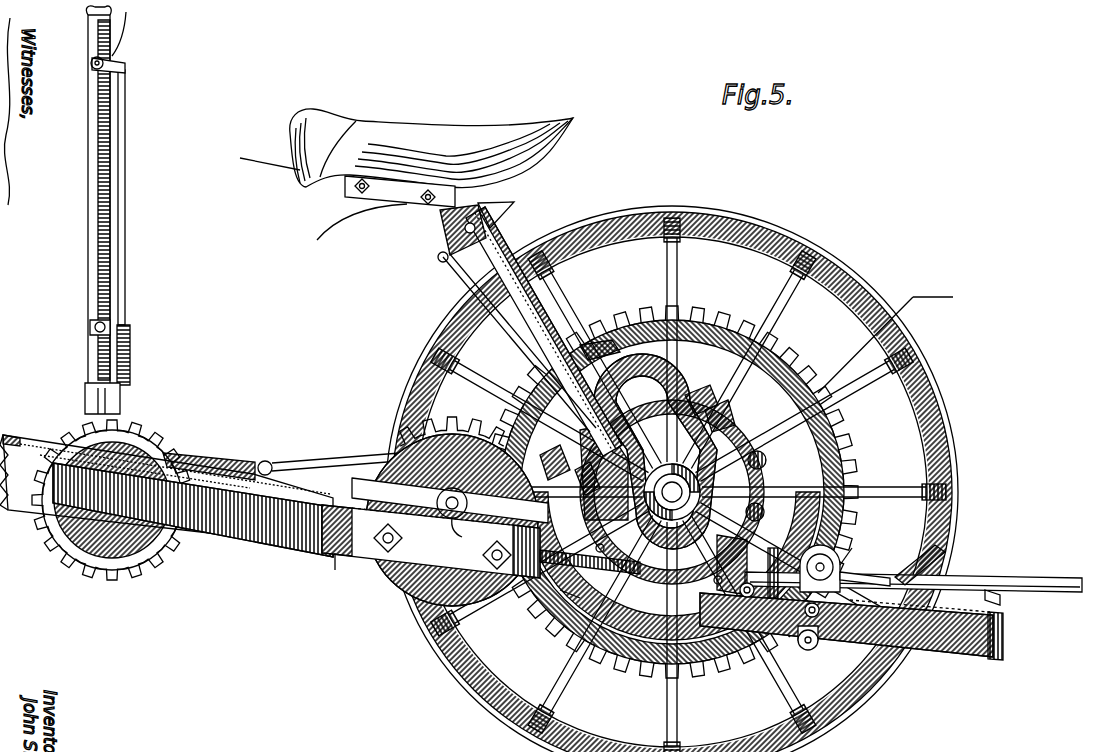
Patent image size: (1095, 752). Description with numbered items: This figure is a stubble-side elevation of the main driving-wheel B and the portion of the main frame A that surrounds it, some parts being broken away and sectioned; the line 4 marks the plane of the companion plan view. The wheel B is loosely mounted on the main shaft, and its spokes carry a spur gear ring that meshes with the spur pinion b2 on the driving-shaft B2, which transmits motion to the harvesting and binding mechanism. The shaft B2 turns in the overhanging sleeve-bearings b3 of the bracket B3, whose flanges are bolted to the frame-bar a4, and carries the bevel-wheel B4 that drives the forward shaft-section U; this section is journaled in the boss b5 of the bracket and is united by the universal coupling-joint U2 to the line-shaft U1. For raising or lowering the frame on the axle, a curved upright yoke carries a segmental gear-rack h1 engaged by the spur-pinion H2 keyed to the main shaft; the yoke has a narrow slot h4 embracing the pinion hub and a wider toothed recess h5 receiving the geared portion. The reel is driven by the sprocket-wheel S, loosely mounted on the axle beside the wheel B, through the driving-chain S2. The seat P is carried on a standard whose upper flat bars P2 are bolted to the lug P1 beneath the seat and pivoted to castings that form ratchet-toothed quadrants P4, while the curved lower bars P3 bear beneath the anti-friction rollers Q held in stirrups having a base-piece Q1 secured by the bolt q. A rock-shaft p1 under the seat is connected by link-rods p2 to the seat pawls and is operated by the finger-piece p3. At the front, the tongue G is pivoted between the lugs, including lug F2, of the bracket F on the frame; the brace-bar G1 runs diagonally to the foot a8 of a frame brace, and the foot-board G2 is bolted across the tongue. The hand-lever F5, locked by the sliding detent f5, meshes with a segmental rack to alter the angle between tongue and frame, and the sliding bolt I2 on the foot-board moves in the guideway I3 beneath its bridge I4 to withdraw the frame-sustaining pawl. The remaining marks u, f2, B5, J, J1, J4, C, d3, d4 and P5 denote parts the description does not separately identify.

The section line 4 4 is at (258, 128).
The driving-wheel B is at (742, 228).
The driving-shaft B2 is at (750, 470).
The spur pinion b2 is at (700, 310).
The sprocket-wheel S is at (762, 458).
The driving-chain S2 is at (764, 512).
The universal coupling-joint U2 is at (735, 612).
The segmental gear-rack h1 is at (646, 400).
The forward shaft-section U is at (586, 500).
The hub u is at (672, 489).
The outer recess or slot h4 is at (700, 395).
The inner recess h5 is at (715, 410).
The flat bars of seat-standard P2 is at (492, 232).
The link-rods p2 is at (512, 330).
The rock-shaft p1 is at (477, 228).
The saddle P is at (431, 146).
The downwardly-projecting lug P1 is at (398, 200).
The finger-piece or latch p3 is at (362, 222).
The spur-pinion H2 is at (626, 322).
The bridge I4 is at (112, 500).
The gear pivot f2 is at (160, 548).
The hand-lever F5 is at (88, 326).
The sliding detent f5 is at (86, 394).
The tongue G is at (42, 495).
The brace-bar G1 is at (193, 510).
The foot-board G2 is at (48, 448).
The guideway I3 is at (190, 452).
The sliding bolt I2 is at (362, 460).
The bevel-wheel B4 is at (448, 435).
The bracket F is at (431, 528).
The lug F2 is at (326, 500).
The bearing plate B5 is at (450, 500).
The sleeve-bearings b3 is at (480, 510).
The bracket B3 is at (484, 548).
The frame-bar a4 is at (655, 577).
The foot of brace-bar a8 is at (330, 558).
The boss b5 is at (583, 536).
The main frame A is at (670, 617).
The bar slot J4 is at (920, 615).
The bar end cap C is at (1004, 636).
The line-shaft U1 is at (965, 584).
The rod end J1 is at (1002, 600).
The anti-friction rollers Q is at (814, 553).
The base-piece Q1 is at (846, 556).
The link J is at (848, 578).
The lower bars of seat-standard P3 is at (920, 563).
The bolt q is at (820, 642).
The hub block d4 is at (612, 602).
The pawl rod d3 is at (540, 598).
The quadrants P4 is at (554, 451).
The bracket P5 is at (587, 478).